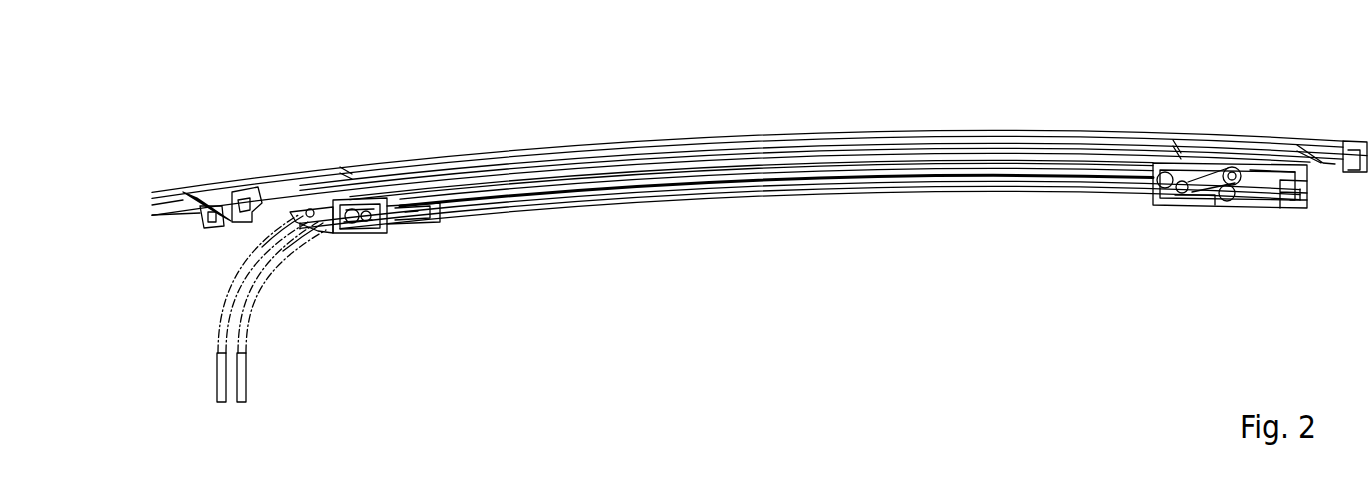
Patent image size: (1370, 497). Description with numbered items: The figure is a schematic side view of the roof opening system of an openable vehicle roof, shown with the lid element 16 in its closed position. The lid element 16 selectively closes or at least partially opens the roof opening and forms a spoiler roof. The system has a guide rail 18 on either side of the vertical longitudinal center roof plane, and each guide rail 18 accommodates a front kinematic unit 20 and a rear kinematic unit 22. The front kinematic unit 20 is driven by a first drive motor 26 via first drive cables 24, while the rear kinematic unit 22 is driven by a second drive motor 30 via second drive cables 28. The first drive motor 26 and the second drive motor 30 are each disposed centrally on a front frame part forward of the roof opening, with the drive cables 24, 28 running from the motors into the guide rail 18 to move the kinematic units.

The lid element 16 is at (759, 137).
The guide rail 18 is at (811, 212).
The front kinematic unit 20 is at (378, 243).
The rear kinematic unit 22 is at (1195, 219).
The first drive cable 24 is at (292, 220).
The first drive motor 26 is at (219, 387).
The second drive cable 28 is at (308, 232).
The second drive motor 30 is at (243, 381).